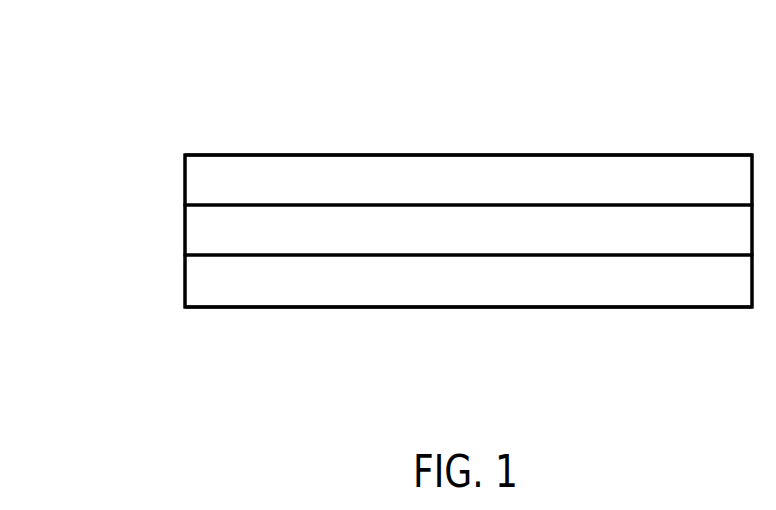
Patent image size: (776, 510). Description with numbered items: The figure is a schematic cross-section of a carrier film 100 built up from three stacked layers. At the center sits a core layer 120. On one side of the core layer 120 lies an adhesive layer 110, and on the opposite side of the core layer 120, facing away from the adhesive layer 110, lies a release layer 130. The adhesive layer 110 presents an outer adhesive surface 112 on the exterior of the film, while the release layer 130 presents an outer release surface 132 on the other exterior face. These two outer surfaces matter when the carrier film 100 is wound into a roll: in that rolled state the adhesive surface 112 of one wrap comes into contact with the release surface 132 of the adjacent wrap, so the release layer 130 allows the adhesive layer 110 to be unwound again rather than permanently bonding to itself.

The carrier film 100 is at (135, 61).
The adhesive layer 110 is at (185, 180).
The outer adhesive surface 112 is at (285, 155).
The core layer 120 is at (185, 229).
The release layer 130 is at (185, 279).
The outer release surface 132 is at (275, 308).